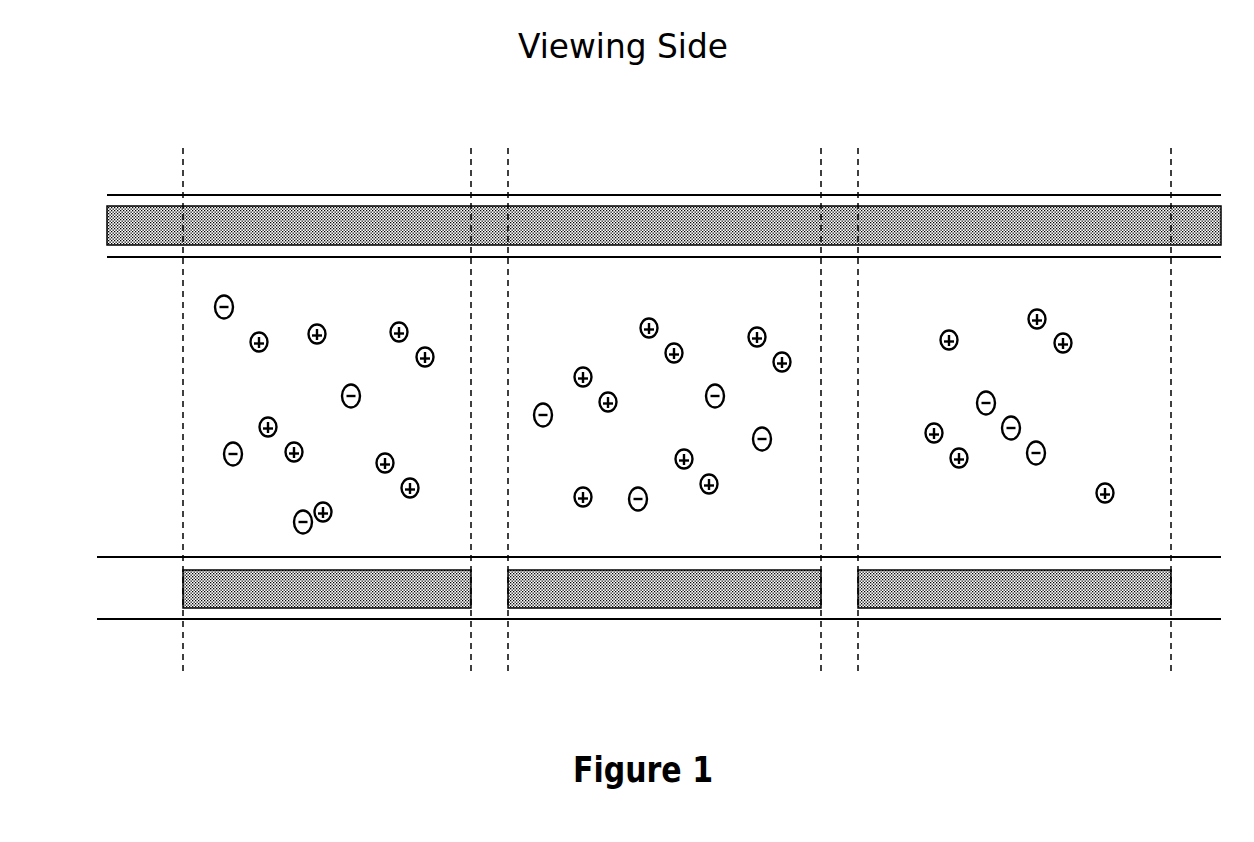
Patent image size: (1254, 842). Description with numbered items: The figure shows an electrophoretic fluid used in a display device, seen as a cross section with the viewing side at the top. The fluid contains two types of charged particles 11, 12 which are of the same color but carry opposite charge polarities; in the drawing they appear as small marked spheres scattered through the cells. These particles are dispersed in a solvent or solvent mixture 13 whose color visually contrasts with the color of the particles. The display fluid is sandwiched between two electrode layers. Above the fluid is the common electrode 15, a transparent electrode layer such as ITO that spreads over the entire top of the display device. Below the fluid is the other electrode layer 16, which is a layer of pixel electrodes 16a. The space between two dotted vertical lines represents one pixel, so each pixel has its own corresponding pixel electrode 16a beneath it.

The charged particles of first type 11 is at (248, 342).
The charged particles of second type 12 is at (222, 461).
The solvent or solvent mixture 13 is at (1132, 394).
The common electrode 15 is at (595, 208).
The electrode layer 16 is at (108, 608).
The pixel electrode 16a is at (320, 609).